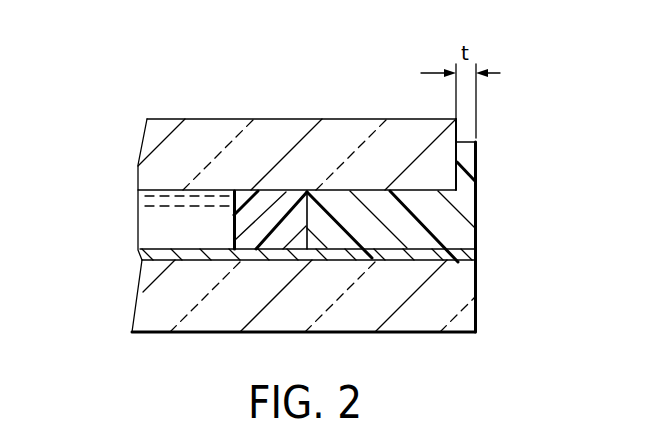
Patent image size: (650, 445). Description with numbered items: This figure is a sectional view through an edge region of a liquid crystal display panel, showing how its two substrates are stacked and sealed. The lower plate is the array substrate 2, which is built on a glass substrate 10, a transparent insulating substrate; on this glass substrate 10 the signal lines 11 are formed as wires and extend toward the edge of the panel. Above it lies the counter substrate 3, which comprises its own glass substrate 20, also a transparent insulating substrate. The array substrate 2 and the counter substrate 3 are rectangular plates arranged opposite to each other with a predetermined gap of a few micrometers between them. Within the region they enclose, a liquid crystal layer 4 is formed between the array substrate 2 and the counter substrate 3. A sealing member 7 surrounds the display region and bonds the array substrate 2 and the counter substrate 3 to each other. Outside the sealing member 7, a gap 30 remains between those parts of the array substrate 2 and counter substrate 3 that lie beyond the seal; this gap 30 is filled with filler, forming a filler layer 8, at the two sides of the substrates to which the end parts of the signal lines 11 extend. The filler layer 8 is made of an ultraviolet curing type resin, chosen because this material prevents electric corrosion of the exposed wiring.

The array substrate 2 is at (113, 299).
The counter substrate 3 is at (116, 142).
The liquid crystal layer 4 is at (157, 210).
The sealing member 7 is at (278, 200).
The filler layer 8 is at (453, 204).
The glass substrate 10 is at (198, 312).
The signal line 11 is at (158, 243).
The glass substrate 20 is at (187, 133).
The gap 30 is at (381, 260).